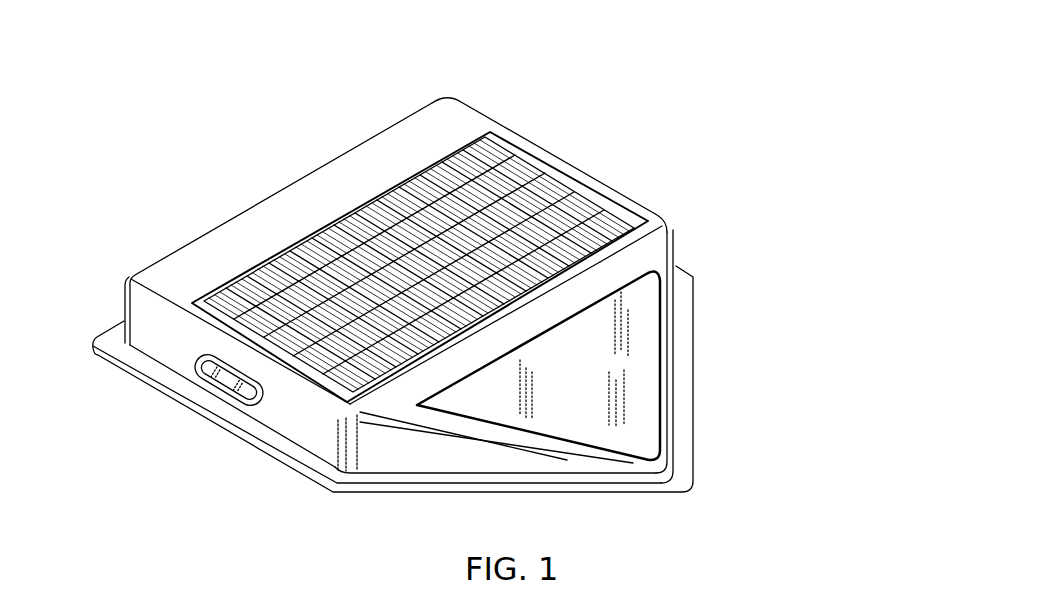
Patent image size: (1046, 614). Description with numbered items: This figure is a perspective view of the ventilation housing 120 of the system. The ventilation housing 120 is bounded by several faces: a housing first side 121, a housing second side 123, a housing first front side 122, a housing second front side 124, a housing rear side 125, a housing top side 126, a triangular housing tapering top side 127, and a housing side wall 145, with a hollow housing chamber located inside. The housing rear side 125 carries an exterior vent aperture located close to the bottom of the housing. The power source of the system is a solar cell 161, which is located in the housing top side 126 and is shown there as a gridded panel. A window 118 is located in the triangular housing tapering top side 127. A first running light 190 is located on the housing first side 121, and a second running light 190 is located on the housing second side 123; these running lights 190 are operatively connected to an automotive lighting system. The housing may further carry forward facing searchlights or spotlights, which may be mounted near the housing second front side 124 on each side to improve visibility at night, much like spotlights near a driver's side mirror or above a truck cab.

The ventilation housing 120 is at (402, 106).
The housing rear side 125 is at (195, 236).
The housing top side 126 is at (466, 118).
The triangular housing tapering top side 127 is at (653, 257).
The housing first front side 122 is at (675, 308).
The housing second front side 124 is at (413, 457).
The housing second side 123 is at (292, 422).
The housing side wall 145 is at (163, 328).
The housing first side 121 is at (573, 170).
The solar cell 161 is at (335, 228).
The window 118 is at (640, 372).
The running light 190 is at (193, 376).